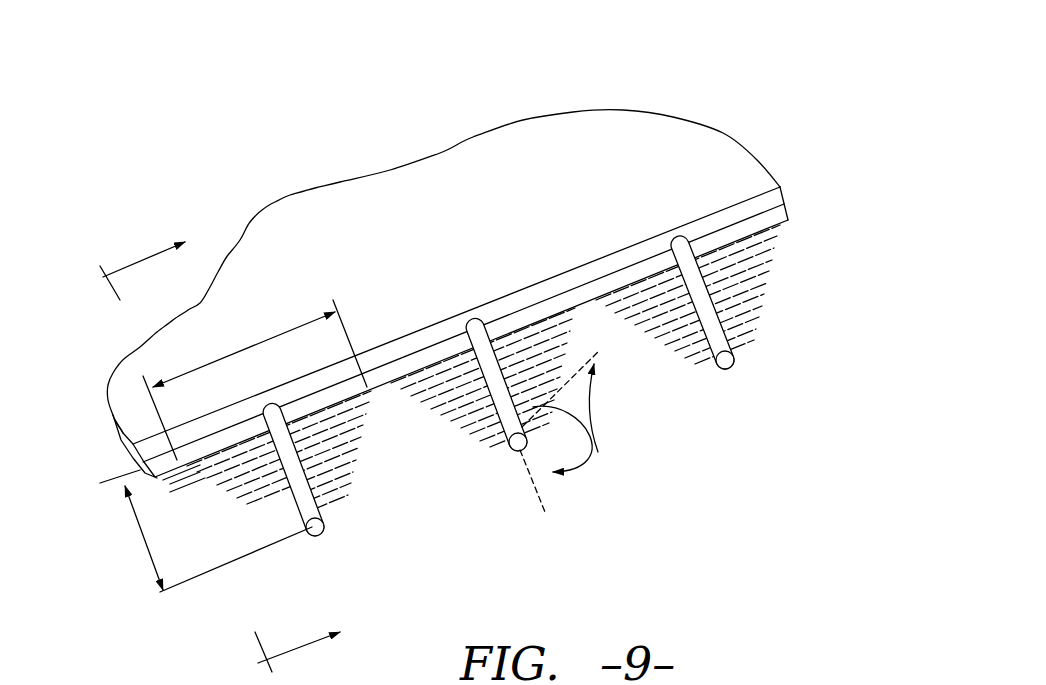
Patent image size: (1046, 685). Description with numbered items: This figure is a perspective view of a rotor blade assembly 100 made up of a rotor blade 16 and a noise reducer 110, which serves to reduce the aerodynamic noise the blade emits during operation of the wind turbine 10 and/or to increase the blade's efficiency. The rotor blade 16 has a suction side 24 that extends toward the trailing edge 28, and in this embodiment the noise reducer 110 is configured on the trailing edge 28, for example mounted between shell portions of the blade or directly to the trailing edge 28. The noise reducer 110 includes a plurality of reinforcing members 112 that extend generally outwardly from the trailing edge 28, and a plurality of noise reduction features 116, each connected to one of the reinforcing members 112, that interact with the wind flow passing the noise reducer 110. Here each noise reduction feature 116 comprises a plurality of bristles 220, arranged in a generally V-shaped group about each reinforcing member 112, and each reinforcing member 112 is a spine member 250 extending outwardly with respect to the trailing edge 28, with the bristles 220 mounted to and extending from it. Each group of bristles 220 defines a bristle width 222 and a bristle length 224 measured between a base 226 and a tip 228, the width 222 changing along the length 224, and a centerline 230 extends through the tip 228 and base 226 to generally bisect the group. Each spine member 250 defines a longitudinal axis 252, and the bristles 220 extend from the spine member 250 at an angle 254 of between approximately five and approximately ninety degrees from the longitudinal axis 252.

The wind turbine 10 is at (235, 442).
The rotor blade 16 is at (682, 106).
The suction side 24 is at (703, 150).
The trailing edge 28 is at (768, 203).
The rotor blade assembly 100 is at (341, 144).
The noise reducer 110 is at (794, 248).
The reinforcing member 112 is at (296, 523).
The noise reduction feature 116 is at (247, 499).
The bristles 220 is at (247, 480).
The bristle width 222 is at (242, 350).
The bristle length 224 is at (145, 545).
The base 226 is at (286, 394).
The tip 228 is at (338, 527).
The centerline 230 is at (501, 429).
The spine member 250 is at (333, 489).
The longitudinal axis 252 is at (548, 503).
The angle 254 is at (599, 425).